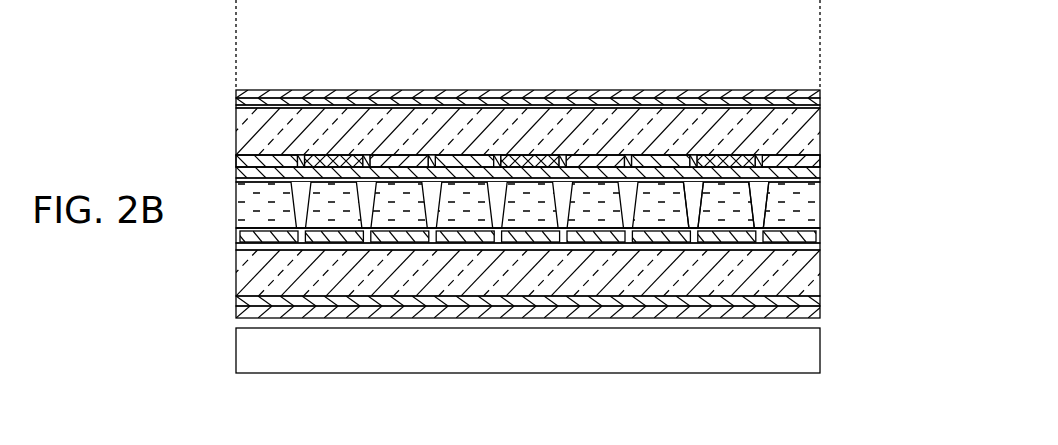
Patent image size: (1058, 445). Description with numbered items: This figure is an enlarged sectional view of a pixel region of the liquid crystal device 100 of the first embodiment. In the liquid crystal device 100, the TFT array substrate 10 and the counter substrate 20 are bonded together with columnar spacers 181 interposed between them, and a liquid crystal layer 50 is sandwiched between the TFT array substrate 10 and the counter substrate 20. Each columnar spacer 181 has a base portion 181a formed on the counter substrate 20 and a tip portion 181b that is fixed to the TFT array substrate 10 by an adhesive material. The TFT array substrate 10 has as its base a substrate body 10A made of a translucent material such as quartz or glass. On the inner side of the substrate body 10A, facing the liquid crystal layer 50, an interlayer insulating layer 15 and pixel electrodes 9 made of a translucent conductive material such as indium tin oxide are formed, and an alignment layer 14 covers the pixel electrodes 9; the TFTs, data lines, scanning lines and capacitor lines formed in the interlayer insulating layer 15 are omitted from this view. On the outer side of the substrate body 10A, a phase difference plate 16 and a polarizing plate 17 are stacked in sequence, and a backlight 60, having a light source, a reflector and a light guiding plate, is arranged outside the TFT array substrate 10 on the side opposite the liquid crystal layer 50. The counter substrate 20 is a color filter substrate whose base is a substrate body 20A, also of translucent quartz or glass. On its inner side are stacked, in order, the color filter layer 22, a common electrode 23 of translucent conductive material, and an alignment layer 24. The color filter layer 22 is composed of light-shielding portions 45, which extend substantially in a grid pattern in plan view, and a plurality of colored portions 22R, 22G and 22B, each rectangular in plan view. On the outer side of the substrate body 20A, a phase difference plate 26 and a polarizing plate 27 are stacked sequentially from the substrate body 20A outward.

The liquid crystal device 100 is at (830, 57).
The counter substrate 20 is at (232, 92).
The polarizing plate 27 is at (820, 91).
The phase difference plate 26 is at (820, 102).
The substrate body 20A is at (820, 131).
The color filter layer 22 is at (568, 97).
The colored portion 22R is at (272, 160).
The colored portion 22G is at (337, 160).
The colored portion 22B is at (401, 160).
The light-shielding portion 45 is at (301, 156).
The common electrode 23 is at (820, 172).
The alignment layer 24 is at (820, 181).
The columnar spacer 181 is at (687, 182).
The base portion 181a is at (749, 182).
The tip portion 181b is at (694, 229).
The liquid crystal layer 50 is at (820, 212).
The TFT array substrate 10 is at (232, 230).
The alignment layer 14 is at (561, 327).
The pixel electrode 9 is at (790, 238).
The interlayer insulating layer 15 is at (818, 247).
The substrate body 10A is at (820, 273).
The phase difference plate 16 is at (820, 298).
The polarizing plate 17 is at (820, 313).
The backlight 60 is at (817, 355).